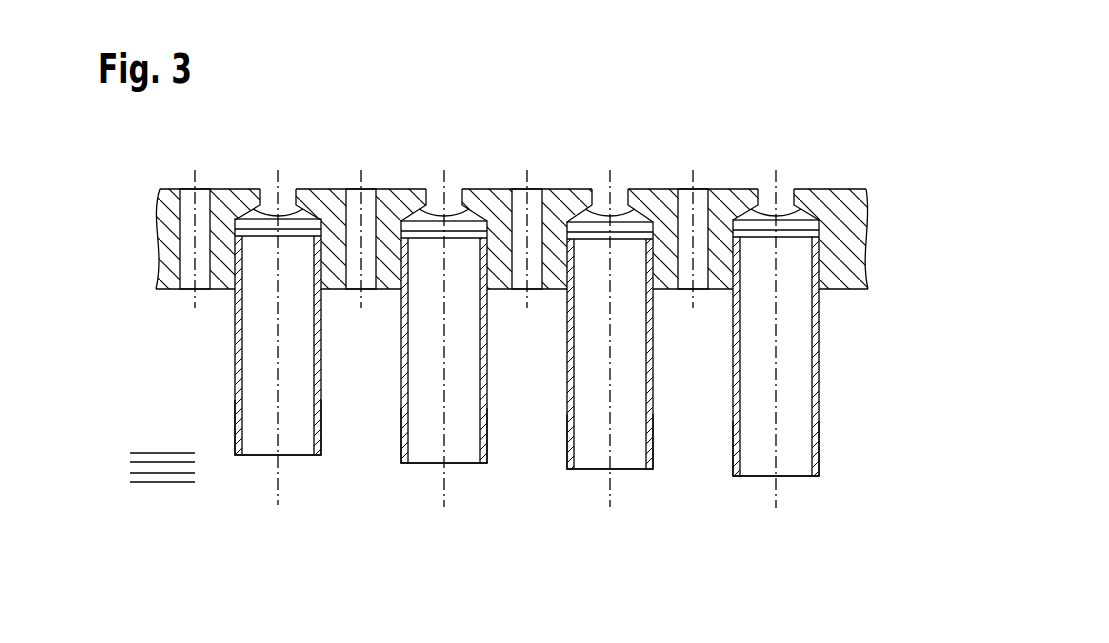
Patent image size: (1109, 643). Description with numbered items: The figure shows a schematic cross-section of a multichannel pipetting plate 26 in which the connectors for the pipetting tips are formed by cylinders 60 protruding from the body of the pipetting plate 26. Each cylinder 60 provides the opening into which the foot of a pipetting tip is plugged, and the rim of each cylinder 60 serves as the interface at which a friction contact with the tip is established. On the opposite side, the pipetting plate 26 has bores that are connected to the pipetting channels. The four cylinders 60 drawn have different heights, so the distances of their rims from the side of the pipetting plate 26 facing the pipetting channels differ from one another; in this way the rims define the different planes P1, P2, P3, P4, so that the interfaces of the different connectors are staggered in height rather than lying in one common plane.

The pipetting plate 26 is at (890, 128).
The cylinder 60 is at (819, 352).
The plane P1 is at (130, 482).
The plane P2 is at (130, 473).
The plane P3 is at (130, 462).
The plane P4 is at (130, 453).